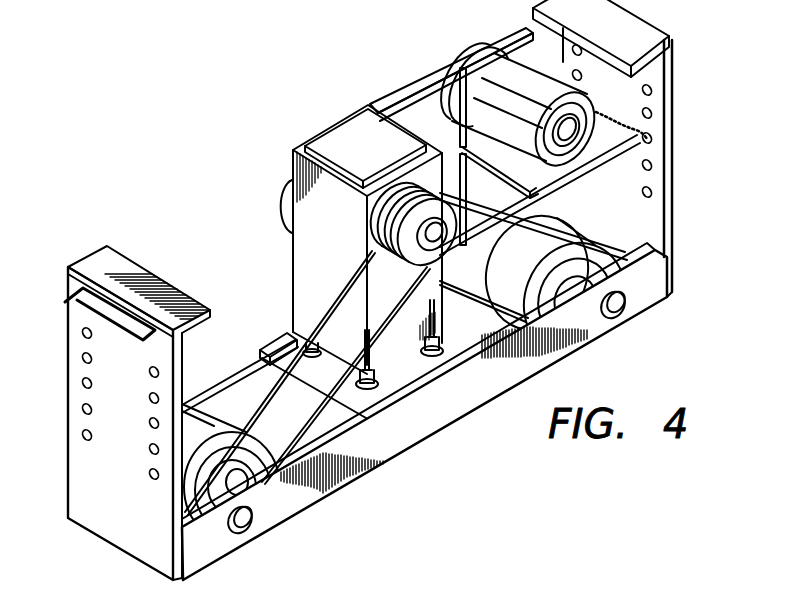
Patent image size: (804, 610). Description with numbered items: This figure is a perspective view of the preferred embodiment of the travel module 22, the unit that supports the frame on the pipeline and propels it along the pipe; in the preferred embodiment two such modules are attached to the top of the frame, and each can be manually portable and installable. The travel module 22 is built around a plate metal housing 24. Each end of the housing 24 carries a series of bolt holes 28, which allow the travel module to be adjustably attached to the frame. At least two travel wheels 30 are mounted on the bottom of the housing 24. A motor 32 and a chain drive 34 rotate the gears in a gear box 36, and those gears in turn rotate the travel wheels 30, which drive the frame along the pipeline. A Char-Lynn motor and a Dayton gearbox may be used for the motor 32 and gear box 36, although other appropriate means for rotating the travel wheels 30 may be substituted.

The travel module 22 is at (484, 442).
The plate metal housing 24 is at (666, 224).
The bolt holes 28 is at (652, 117).
The travel wheels 30 is at (586, 201).
The motor 32 is at (503, 45).
The chain drive 34 is at (424, 78).
The gear box 36 is at (340, 128).